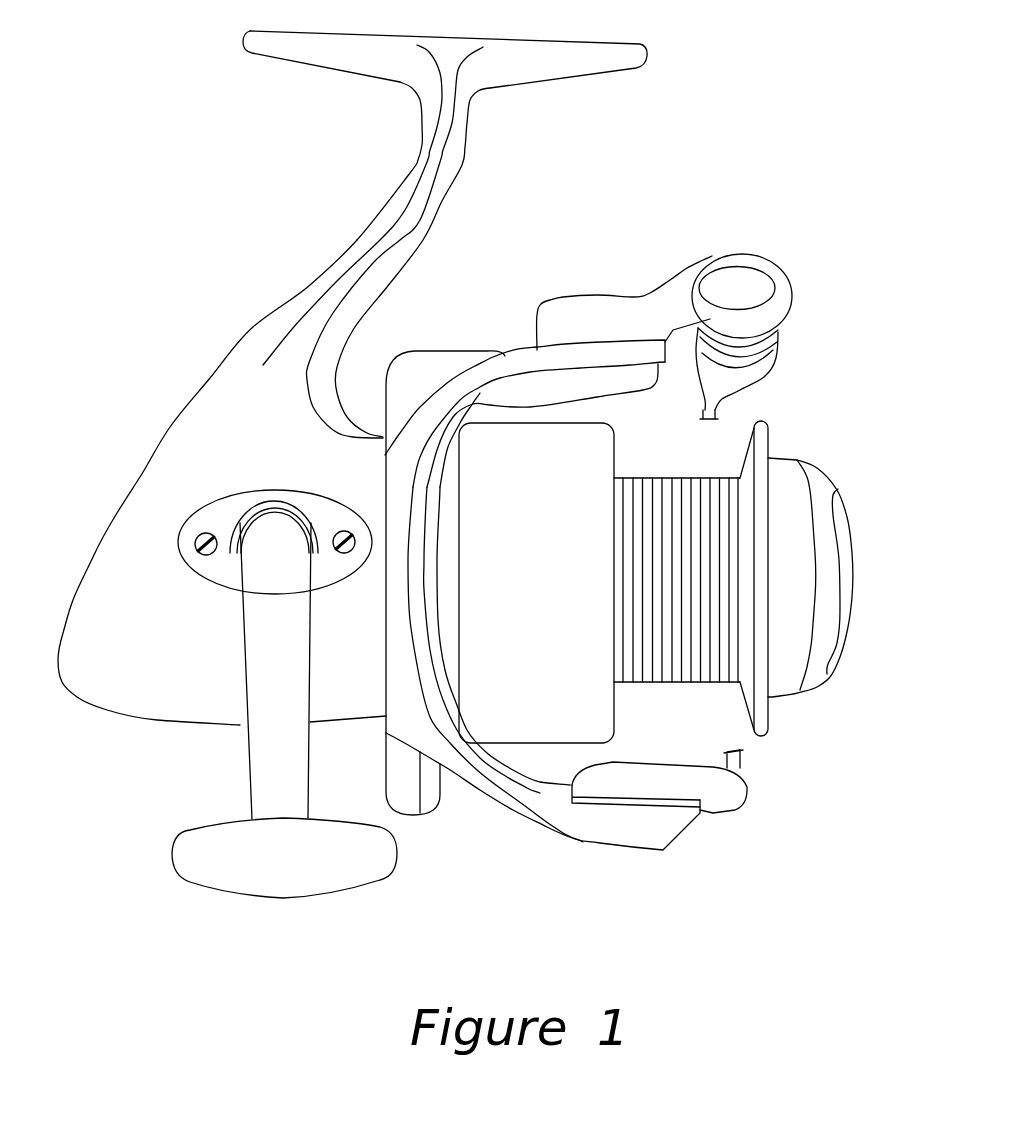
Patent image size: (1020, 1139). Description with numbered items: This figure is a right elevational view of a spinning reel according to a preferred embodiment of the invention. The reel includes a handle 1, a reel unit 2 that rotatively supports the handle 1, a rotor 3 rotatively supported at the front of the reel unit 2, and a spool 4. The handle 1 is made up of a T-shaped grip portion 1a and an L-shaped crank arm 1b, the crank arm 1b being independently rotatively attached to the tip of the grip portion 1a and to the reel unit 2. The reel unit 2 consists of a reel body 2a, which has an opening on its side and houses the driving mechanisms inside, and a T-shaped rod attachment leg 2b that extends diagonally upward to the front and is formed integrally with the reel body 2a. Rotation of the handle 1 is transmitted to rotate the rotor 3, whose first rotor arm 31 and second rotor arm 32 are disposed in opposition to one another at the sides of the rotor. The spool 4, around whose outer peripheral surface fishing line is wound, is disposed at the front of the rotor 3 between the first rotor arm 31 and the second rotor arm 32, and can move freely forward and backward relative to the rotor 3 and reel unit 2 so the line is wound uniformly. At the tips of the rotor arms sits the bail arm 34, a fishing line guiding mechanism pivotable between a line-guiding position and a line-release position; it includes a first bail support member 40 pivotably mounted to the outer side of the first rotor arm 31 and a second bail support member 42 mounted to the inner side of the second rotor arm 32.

The handle 1 is at (272, 760).
The grip portion 1a is at (288, 873).
The crank arm 1b is at (293, 755).
The reel unit 2 is at (166, 421).
The reel body 2a is at (150, 497).
The rod attachment leg 2b is at (253, 327).
The rotor 3 is at (444, 338).
The first rotor arm 31 is at (580, 358).
The second rotor arm 32 is at (604, 825).
The bail arm 34 is at (798, 315).
The spool 4 is at (664, 471).
The first bail support member 40 is at (687, 274).
The second bail support member 42 is at (723, 797).